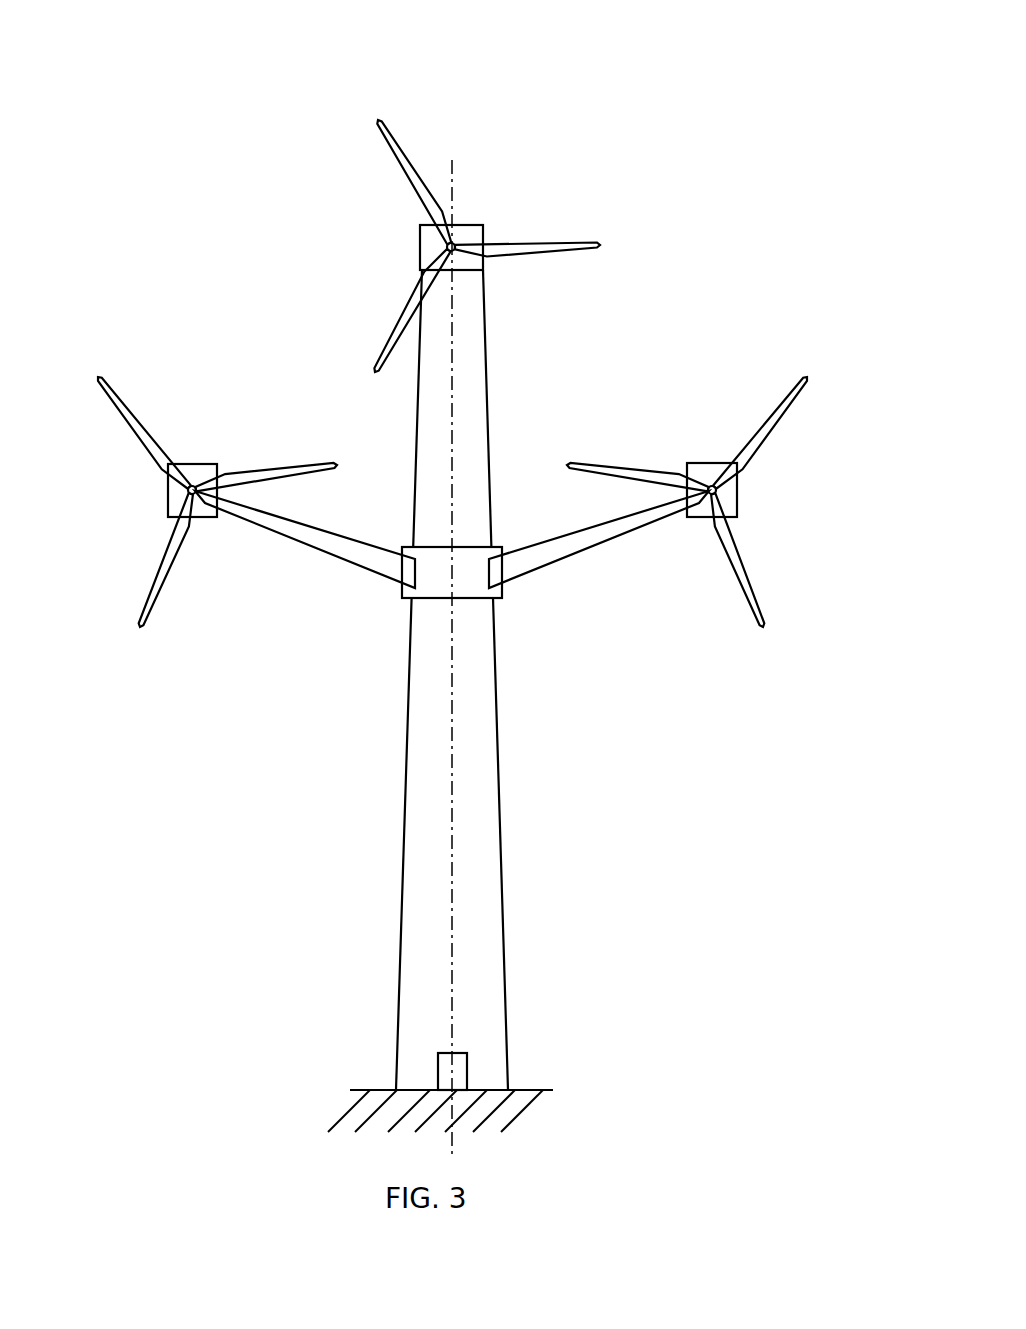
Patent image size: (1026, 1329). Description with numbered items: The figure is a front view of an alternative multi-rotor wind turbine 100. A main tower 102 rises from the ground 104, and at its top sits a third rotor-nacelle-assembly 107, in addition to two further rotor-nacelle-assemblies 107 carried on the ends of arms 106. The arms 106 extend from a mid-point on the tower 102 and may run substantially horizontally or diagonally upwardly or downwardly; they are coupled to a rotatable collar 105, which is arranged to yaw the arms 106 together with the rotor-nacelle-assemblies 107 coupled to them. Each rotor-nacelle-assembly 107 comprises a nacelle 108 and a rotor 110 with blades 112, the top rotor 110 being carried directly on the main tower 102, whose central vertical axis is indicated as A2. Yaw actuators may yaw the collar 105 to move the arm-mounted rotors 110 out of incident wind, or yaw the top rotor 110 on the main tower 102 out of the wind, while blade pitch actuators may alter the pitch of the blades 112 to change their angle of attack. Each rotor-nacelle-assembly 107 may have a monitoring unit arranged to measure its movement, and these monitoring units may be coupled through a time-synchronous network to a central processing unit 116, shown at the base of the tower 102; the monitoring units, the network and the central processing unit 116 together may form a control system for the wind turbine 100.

The multi-rotor wind turbine 100 is at (166, 124).
The tower 102 is at (500, 780).
The ground / foundation 104 is at (540, 1088).
The rotatable collar 105 is at (494, 548).
The arms 106 is at (275, 546).
The rotor-nacelle-assembly 107 is at (472, 355).
The nacelle 108 is at (482, 224).
The top rotor 110 is at (466, 355).
The rotor blade 112 is at (405, 168).
The central processing unit 116 is at (468, 1067).
The tower axis A2 is at (457, 186).